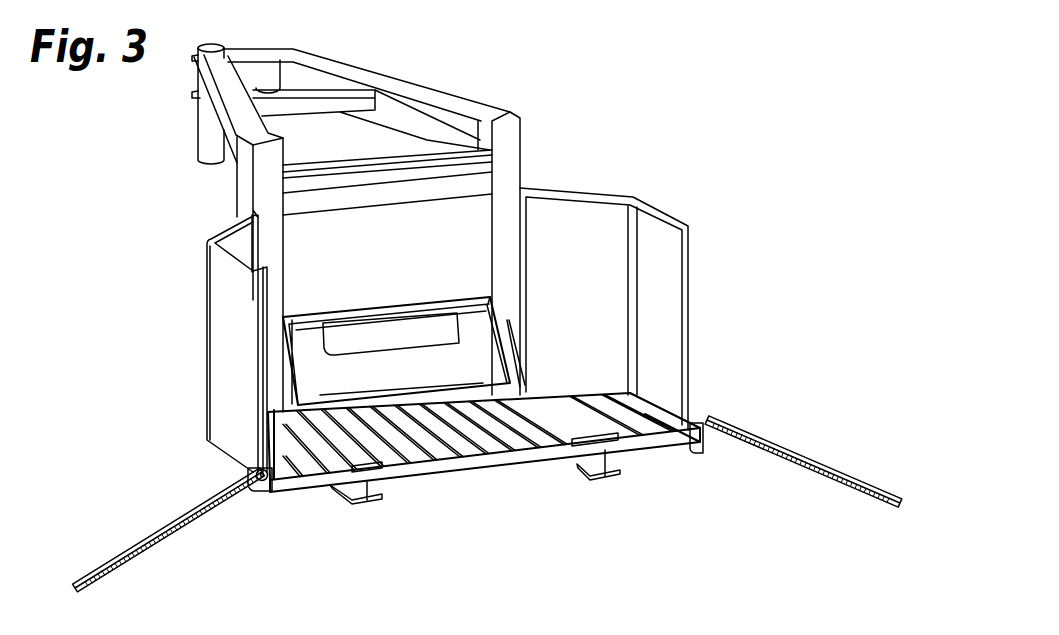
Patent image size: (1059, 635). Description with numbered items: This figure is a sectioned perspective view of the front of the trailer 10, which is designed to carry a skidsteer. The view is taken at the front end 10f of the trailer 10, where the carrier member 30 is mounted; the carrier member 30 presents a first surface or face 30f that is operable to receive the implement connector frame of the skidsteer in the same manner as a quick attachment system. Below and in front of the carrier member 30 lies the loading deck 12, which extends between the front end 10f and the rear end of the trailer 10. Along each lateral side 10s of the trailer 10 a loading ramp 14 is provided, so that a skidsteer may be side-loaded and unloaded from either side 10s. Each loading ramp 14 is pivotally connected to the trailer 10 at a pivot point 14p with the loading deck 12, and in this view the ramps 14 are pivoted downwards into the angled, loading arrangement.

The trailer 10 is at (660, 68).
The front end 10f is at (147, 245).
The lateral side 10s is at (267, 510).
The loading deck 12 is at (485, 467).
The loading ramp 14 is at (130, 505).
The pivot point 14p is at (223, 465).
The carrier member 30 is at (580, 351).
The first surface or face 30f is at (465, 365).